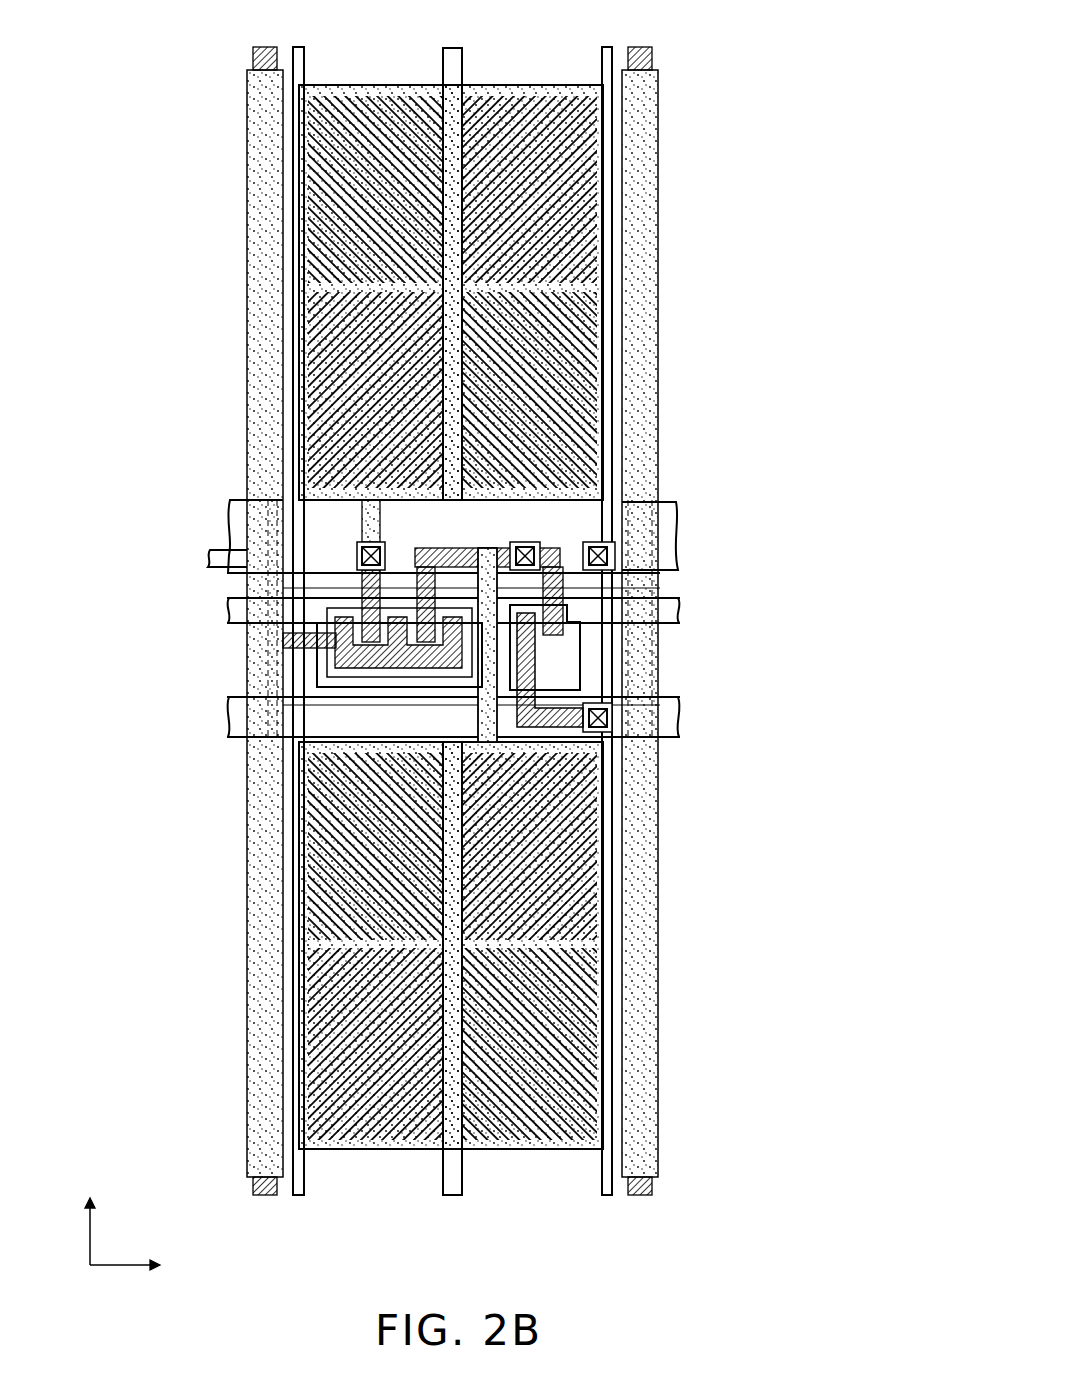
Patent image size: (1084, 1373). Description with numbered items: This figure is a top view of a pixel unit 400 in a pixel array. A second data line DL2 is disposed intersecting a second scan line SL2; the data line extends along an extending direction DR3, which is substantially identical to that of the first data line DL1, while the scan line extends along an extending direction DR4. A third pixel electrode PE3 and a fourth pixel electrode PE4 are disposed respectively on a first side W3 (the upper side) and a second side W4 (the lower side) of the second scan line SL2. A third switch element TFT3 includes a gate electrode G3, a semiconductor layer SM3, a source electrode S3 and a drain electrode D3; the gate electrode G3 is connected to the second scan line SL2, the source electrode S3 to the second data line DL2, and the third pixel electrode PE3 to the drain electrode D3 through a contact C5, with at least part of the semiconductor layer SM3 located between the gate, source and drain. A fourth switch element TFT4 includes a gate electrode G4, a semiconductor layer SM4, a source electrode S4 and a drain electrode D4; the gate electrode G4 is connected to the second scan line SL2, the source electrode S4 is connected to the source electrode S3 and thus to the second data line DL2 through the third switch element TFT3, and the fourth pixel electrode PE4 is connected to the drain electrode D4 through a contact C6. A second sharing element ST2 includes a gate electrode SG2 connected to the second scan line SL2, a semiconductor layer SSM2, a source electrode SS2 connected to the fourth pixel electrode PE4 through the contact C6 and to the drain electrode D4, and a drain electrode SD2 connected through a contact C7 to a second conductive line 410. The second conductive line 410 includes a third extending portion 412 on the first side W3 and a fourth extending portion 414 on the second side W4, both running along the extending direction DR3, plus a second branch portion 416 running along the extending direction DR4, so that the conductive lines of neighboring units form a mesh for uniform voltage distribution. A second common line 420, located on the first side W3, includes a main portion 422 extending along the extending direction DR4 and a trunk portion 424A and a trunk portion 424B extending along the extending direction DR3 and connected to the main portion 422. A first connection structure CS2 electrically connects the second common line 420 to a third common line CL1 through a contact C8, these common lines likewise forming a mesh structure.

The second data line DL2 is at (265, 62).
The first data line DL1 is at (637, 62).
The third common line CL1 is at (646, 203).
The third extending portion 412 is at (453, 62).
The fourth extending portion 414 is at (453, 1178).
The second branch portion 416 is at (240, 716).
The second conductive line 410 is at (858, 770).
The second common line 420 is at (858, 890).
The main portion 422 is at (238, 535).
The trunk portion 424A is at (296, 258).
The trunk portion 424B is at (610, 285).
The third pixel electrode PE3 is at (312, 180).
The fourth pixel electrode PE4 is at (312, 892).
The third switch element TFT3 is at (858, 37).
The fourth switch element TFT4 is at (858, 203).
The second sharing element ST2 is at (858, 353).
The semiconductor layer SM3 is at (332, 667).
The semiconductor layer SM4 is at (300, 640).
The drain electrode D3 is at (370, 580).
The drain electrode D4 is at (420, 605).
The source electrode S3 is at (340, 650).
The source electrode S4 is at (453, 640).
The gate electrode G3 is at (360, 681).
The gate electrode G4 is at (455, 682).
The semiconductor layer SSM2 is at (548, 648).
The source electrode SS2 is at (500, 618).
The drain electrode SD2 is at (565, 720).
The gate electrode SG2 is at (560, 652).
The second scan line SL2 is at (275, 611).
The first connection structure CS2 is at (618, 556).
The first side W3 is at (670, 596).
The second side W4 is at (668, 624).
The contact C5 is at (362, 548).
The contact C6 is at (522, 548).
The contact C7 is at (612, 718).
The contact C8 is at (600, 545).
The extending direction DR3 is at (94, 1214).
The extending direction DR4 is at (152, 1265).
The pixel unit 400 is at (773, 1256).